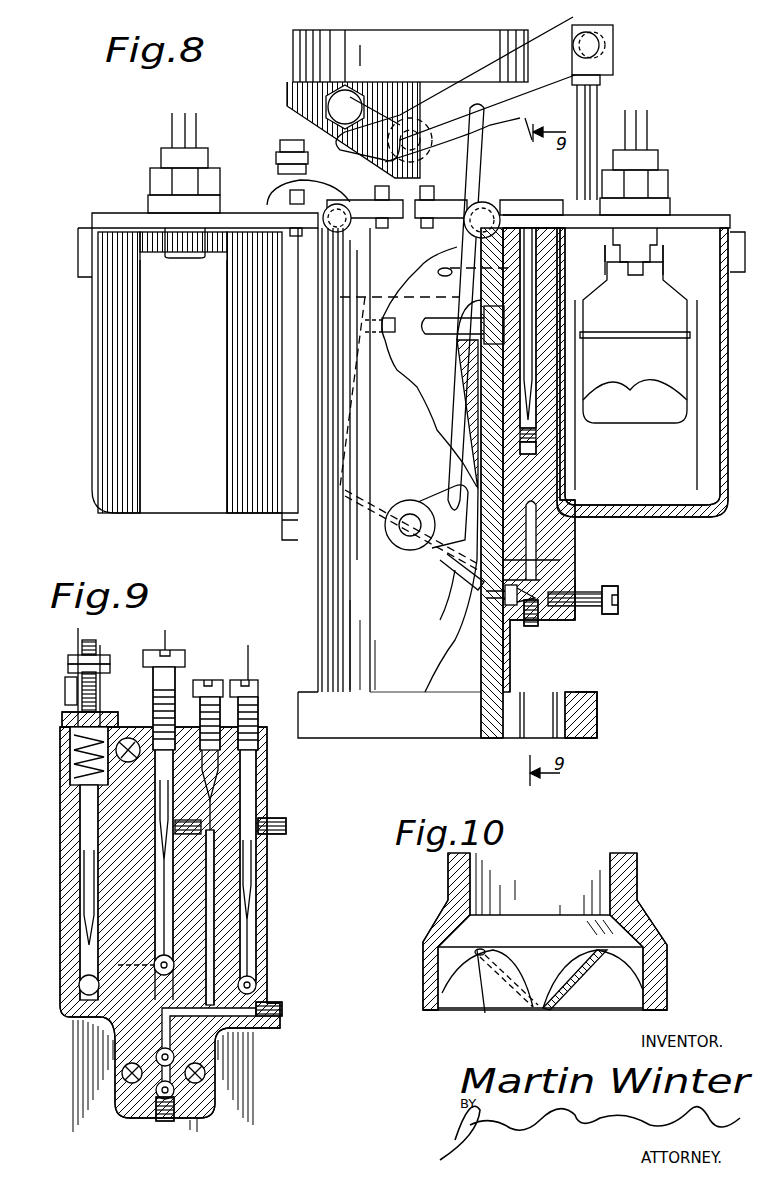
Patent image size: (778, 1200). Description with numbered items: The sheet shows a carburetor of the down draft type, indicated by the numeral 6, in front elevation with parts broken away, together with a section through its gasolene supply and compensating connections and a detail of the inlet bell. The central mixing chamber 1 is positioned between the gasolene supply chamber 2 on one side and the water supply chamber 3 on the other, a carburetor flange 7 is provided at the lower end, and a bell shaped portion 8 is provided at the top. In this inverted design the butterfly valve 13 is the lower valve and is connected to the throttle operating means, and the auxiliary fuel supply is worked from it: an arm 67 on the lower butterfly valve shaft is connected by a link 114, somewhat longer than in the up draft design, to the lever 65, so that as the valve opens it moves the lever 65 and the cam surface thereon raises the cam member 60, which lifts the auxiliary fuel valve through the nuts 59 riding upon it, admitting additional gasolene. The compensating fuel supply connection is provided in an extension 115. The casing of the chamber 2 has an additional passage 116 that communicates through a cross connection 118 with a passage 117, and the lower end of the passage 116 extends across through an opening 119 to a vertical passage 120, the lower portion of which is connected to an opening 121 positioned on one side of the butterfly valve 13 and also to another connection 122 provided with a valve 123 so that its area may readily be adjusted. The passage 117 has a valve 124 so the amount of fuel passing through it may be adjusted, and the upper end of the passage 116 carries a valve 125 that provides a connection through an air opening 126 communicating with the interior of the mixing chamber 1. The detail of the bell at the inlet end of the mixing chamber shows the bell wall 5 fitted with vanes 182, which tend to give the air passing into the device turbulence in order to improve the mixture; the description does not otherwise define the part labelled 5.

In FIG. 8, the mixing chamber 1 is at (442, 725).
In FIG. 10, the mixing chamber 1 is at (635, 875).
In FIG. 8, the gasolene supply chamber 2 is at (672, 493).
In FIG. 8, the water supply chamber 3 is at (95, 485).
In FIG. 10, the mixing chamber 5 is at (665, 982).
In FIG. 8, the down draft carburetor 6 is at (322, 608).
In FIG. 8, the carburetor flange 7 is at (585, 700).
In FIG. 8, the bell shaped portion 8 is at (293, 72).
In FIG. 8, the butterfly valve 13 is at (470, 575).
In FIG. 9, the nuts 59 is at (68, 660).
In FIG. 9, the cam member 60 is at (62, 692).
In FIG. 8, the lever 65 is at (540, 55).
In FIG. 8, the arm 67 is at (430, 500).
In FIG. 8, the link 114 is at (515, 135).
In FIG. 8, the extension 115 is at (580, 585).
In FIG. 9, the passage 116 is at (210, 960).
In FIG. 9, the passage 117 is at (245, 950).
In FIG. 9, the cross connection 118 is at (218, 830).
In FIG. 9, the opening 119 is at (195, 1010).
In FIG. 8, the vertical passage 120 is at (548, 522).
In FIG. 8, the opening 121 is at (512, 560).
In FIG. 8, the connection 122 is at (486, 594).
In FIG. 8, the valve 123 is at (540, 622).
In FIG. 9, the valve 124 is at (245, 800).
In FIG. 9, the valve 125 is at (210, 675).
In FIG. 8, the air opening 126 is at (438, 270).
In FIG. 9, the air opening 126 is at (215, 775).
In FIG. 10, the vanes 182 is at (485, 1013).